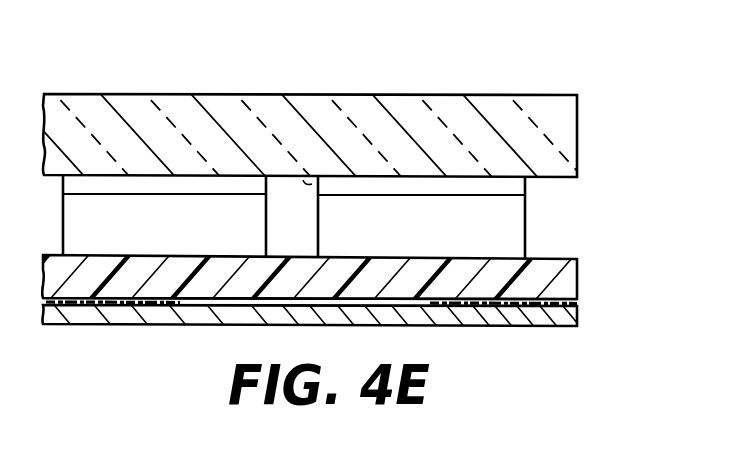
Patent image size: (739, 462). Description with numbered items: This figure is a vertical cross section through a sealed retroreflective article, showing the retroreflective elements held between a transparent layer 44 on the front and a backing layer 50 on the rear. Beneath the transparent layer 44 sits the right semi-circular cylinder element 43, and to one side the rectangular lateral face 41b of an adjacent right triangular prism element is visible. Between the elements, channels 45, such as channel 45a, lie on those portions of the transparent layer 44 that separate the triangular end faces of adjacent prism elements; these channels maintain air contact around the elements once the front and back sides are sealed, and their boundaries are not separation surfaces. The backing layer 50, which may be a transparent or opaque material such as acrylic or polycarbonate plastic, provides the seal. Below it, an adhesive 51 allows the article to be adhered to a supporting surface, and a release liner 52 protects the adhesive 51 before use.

The transparent layer 44 is at (570, 133).
The right semi-circular cylinder element 43 is at (512, 187).
The rectangular lateral face 41b is at (435, 238).
The channels 45 is at (282, 200).
The channel 45a is at (306, 182).
The backing layer 50 is at (574, 266).
The adhesive 51 is at (577, 300).
The release liner 52 is at (562, 320).